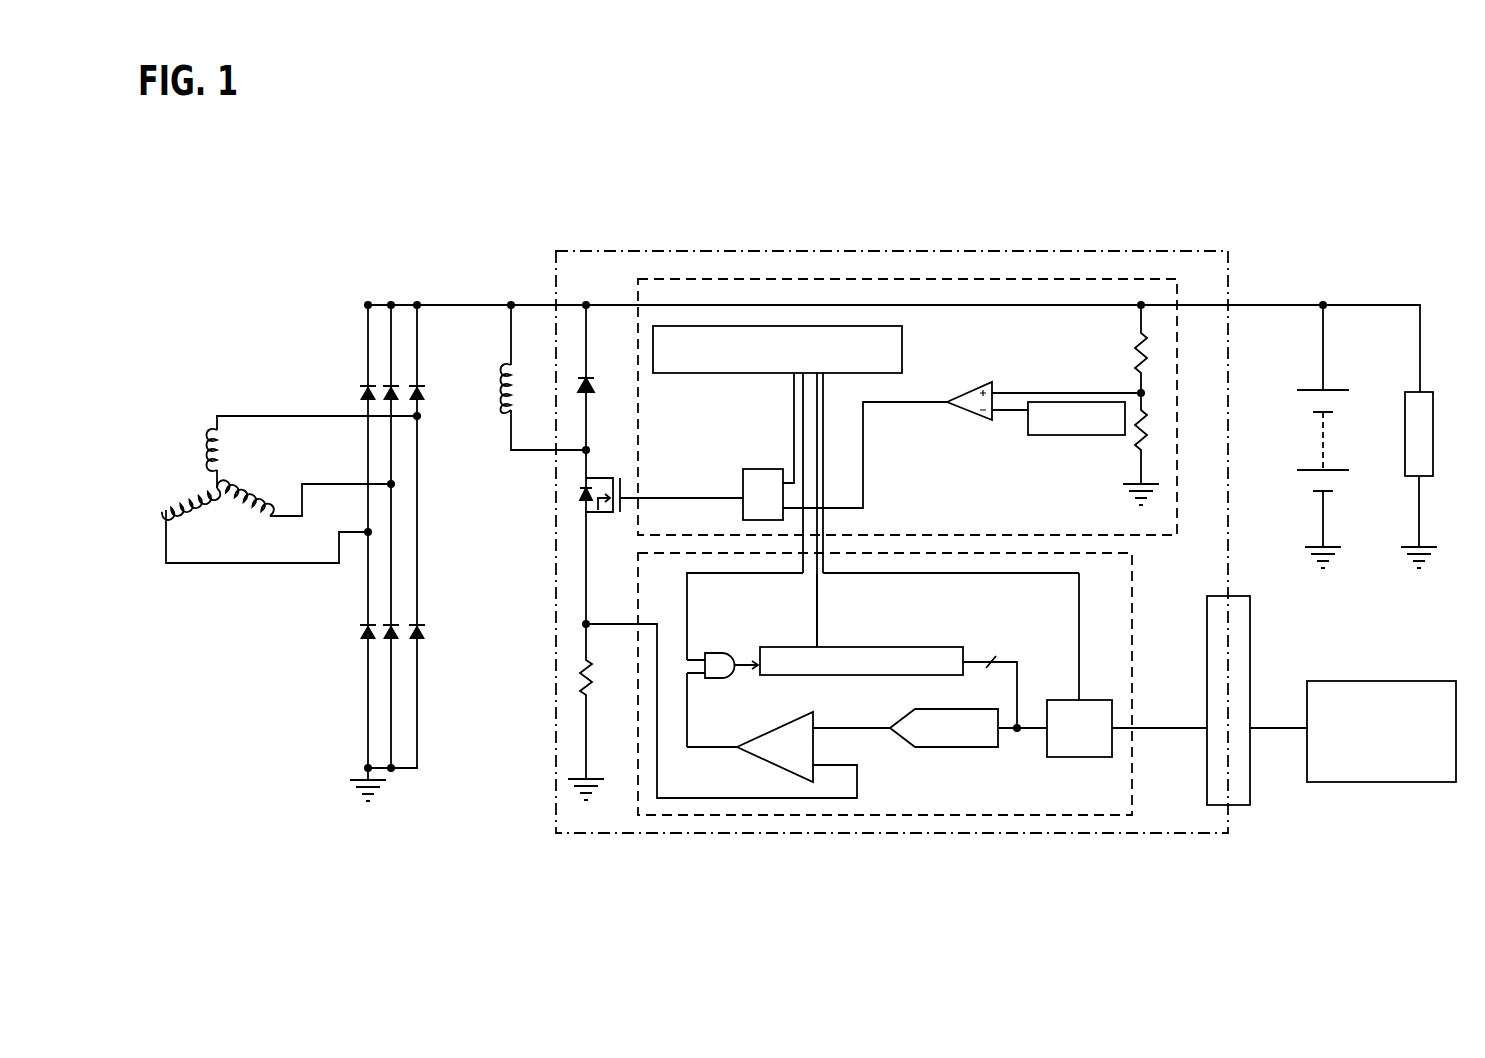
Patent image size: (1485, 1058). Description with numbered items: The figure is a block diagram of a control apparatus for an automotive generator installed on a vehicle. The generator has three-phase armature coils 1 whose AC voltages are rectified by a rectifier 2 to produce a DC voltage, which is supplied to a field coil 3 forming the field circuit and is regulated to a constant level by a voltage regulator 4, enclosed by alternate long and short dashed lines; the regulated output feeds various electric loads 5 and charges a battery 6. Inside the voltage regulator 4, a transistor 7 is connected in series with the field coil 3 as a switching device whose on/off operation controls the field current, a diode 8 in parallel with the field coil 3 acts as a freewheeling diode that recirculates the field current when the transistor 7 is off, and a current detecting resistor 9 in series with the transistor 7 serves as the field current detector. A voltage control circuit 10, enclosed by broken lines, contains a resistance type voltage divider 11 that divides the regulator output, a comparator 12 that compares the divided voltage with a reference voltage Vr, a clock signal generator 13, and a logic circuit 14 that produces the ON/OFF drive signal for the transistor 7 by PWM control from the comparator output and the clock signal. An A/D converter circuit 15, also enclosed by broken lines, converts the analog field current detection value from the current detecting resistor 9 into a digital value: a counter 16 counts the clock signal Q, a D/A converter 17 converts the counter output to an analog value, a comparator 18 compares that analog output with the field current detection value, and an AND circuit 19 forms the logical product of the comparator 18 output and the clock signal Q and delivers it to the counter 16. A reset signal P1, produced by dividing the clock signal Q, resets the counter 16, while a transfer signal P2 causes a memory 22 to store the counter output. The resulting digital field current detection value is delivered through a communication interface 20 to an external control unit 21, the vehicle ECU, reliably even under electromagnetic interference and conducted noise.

The three-phase armature coils 1 is at (205, 412).
The rectifier 2 is at (378, 553).
The field coil 3 is at (497, 392).
The voltage regulator 4 is at (700, 251).
The electric loads 5 is at (1427, 380).
The battery 6 is at (1330, 378).
The transistor 7 is at (576, 498).
The diode 8 is at (593, 378).
The current detecting resistor 9 is at (574, 678).
The voltage control circuit 10 is at (1002, 279).
The resistance type voltage divider 11 is at (1130, 351).
The comparator 12 is at (964, 390).
The clock signal generator 13 is at (731, 373).
The logic circuit 14 is at (756, 469).
The A/D converter circuit 15 is at (960, 815).
The counter 16 is at (870, 647).
The D/A converter 17 is at (934, 708).
The comparator 18 is at (768, 734).
The AND circuit 19 is at (734, 656).
The communication interface 20 is at (1250, 648).
The external control unit 21 is at (1367, 681).
The memory 22 is at (1085, 700).
The clock signal Q is at (690, 598).
The reset signal P1 is at (820, 600).
The transfer signal P2 is at (1077, 608).